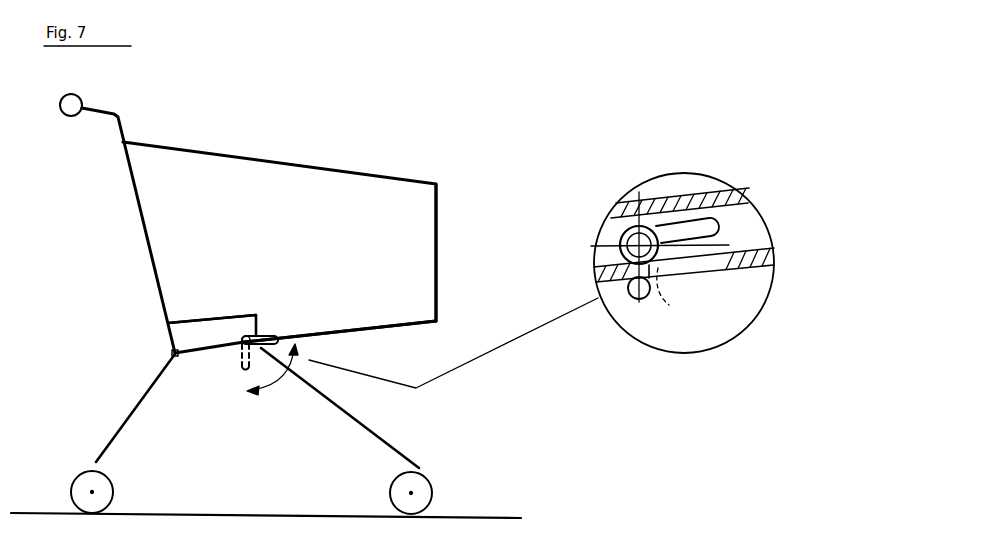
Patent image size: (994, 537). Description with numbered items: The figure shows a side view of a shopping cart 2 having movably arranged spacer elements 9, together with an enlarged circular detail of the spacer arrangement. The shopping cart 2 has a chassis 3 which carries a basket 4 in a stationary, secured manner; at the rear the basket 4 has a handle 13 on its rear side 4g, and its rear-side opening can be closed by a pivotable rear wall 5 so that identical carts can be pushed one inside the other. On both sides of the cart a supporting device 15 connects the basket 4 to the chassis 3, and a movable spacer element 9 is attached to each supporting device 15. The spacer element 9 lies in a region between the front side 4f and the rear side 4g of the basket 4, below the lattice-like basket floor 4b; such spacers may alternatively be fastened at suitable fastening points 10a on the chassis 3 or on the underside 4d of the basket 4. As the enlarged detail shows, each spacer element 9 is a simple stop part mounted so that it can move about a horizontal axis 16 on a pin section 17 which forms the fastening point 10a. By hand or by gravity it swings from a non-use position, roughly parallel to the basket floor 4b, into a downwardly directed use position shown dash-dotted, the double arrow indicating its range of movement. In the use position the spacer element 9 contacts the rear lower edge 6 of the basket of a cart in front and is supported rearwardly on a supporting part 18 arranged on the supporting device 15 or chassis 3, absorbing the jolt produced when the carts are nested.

The shopping cart 2 is at (338, 143).
The chassis 3 is at (117, 432).
The basket 4 is at (217, 197).
The basket floor 4b is at (360, 316).
The underside of the basket 4d is at (390, 327).
The front side of the basket 4f is at (445, 220).
The rear side of the basket 4g is at (130, 204).
The pivotable rear wall 5 is at (111, 255).
The rear lower edge 6 is at (170, 354).
The spacer element 9 is at (548, 202).
The fastening point 10a is at (633, 242).
The handle 13 is at (75, 115).
The supporting device 15 is at (207, 337).
The horizontal axis 16 is at (240, 336).
The pin section 17 is at (245, 357).
The supporting part 18 is at (633, 293).